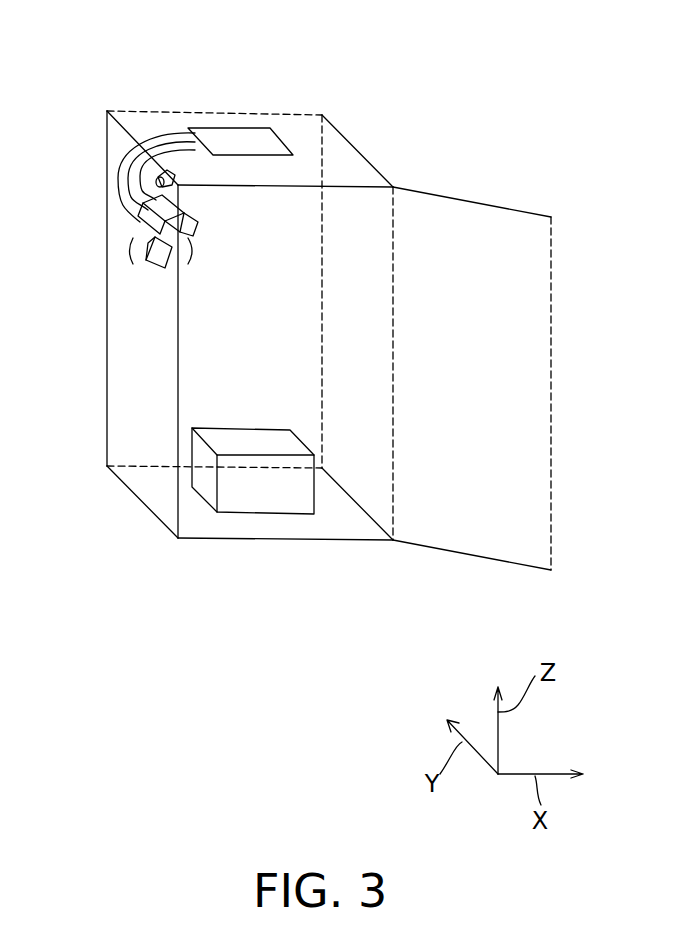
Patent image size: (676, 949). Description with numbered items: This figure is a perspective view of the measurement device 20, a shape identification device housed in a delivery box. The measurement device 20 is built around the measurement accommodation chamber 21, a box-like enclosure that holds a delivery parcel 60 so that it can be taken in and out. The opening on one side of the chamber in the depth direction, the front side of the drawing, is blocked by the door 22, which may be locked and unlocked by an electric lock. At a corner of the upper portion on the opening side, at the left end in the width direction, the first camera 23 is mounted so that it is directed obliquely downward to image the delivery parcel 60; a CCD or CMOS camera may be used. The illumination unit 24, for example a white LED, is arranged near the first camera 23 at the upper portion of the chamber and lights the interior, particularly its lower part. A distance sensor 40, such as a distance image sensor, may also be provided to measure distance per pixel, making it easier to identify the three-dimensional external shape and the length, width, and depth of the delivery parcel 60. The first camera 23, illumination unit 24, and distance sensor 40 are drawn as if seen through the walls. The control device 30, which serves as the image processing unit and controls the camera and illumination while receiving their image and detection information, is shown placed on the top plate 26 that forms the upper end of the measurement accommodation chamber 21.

The measurement device 20 is at (273, 82).
The measurement accommodation chamber 21 is at (290, 213).
The door 22 is at (485, 233).
The first camera 23 is at (148, 212).
The illumination unit 24 is at (170, 172).
The top plate 26 is at (297, 130).
The control device 30 is at (233, 143).
The distance sensor 40 is at (160, 265).
The delivery parcel 60 is at (253, 497).